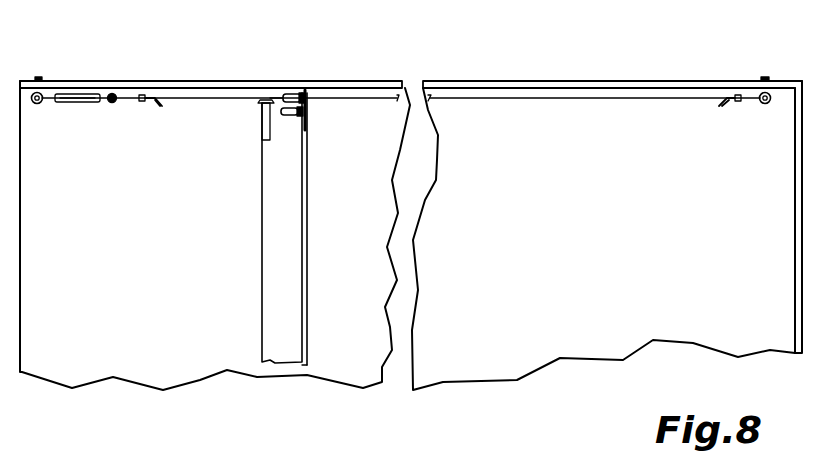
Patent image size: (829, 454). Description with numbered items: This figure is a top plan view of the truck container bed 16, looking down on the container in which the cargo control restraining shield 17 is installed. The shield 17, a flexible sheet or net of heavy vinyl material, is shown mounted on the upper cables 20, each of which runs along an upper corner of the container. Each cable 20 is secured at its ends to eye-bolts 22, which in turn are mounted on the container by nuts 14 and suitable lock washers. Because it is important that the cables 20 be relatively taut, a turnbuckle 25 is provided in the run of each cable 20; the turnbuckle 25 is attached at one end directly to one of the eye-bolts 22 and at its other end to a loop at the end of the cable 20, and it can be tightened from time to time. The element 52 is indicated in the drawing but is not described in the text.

The nut 14 is at (40, 76).
The bed 16 is at (512, 297).
The cargo control restraining shield 17 is at (275, 264).
The cable 20 is at (582, 100).
The eye-bolt 22 is at (42, 103).
The turnbuckle 25 is at (85, 103).
The top rail 52 is at (316, 74).